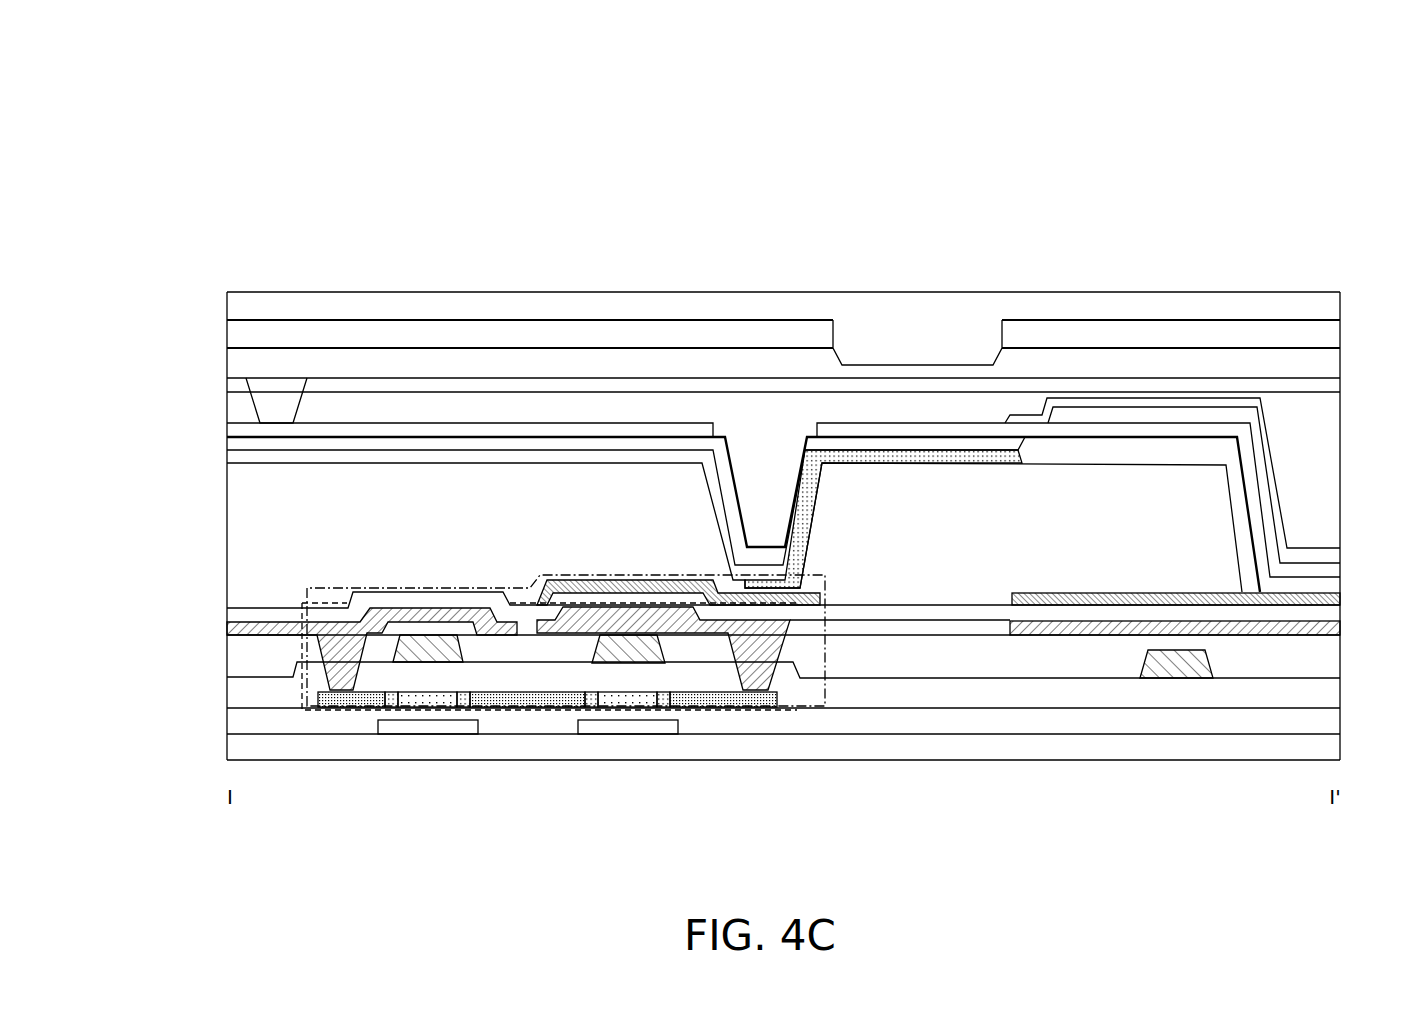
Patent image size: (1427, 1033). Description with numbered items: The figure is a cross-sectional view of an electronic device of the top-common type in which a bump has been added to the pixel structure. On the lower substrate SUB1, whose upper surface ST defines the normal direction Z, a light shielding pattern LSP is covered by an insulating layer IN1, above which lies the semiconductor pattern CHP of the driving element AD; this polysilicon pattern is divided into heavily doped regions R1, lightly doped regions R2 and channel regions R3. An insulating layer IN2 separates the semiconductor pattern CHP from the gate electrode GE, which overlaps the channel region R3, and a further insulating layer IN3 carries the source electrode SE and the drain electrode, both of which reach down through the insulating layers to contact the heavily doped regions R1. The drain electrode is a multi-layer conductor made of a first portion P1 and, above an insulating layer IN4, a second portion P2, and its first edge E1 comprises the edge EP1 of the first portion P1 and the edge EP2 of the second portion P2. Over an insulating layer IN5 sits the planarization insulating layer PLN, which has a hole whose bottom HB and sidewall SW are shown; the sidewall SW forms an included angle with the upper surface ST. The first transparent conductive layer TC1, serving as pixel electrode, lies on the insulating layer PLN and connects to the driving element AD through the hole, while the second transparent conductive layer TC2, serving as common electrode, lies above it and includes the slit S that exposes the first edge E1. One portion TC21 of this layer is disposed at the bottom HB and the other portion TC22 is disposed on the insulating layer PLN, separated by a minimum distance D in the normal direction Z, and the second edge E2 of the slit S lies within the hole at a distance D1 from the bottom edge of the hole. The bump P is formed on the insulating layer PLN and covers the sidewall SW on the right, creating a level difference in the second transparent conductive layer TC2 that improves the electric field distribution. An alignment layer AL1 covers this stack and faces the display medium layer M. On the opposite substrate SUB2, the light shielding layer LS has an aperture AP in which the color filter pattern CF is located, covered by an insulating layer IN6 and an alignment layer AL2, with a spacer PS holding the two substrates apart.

The driving element AD is at (732, 777).
The substrate SUB2 is at (1325, 302).
The light shielding layer LS is at (242, 333).
The insulating layer IN6 is at (1325, 367).
The alignment layer AL2 is at (1325, 383).
The color filter pattern CF is at (920, 348).
The aperture AP is at (842, 340).
The slit S is at (1047, 560).
The distance D1 is at (807, 615).
The normal direction Z is at (1405, 265).
The spacer PS is at (265, 404).
The alignment layer AL1 is at (242, 430).
The second transparent conductive layer TC2 is at (242, 446).
The other portion of second transparent conductive layer TC22 is at (650, 436).
The portion of second transparent conductive layer TC21 is at (752, 546).
The display medium layer M is at (1325, 405).
The bump P is at (1233, 468).
The insulating layer PLN is at (1210, 513).
The first transparent conductive layer TC1 is at (919, 458).
The sidewall SW is at (824, 525).
The bottom of hole HB is at (732, 586).
The second edge E2 is at (769, 558).
The minimum distance D is at (745, 548).
The insulating layer IN5 is at (1325, 582).
The insulating layer IN4 is at (1325, 613).
The insulating layer IN3 is at (1325, 655).
The insulating layer IN2 is at (1325, 690).
The insulating layer IN1 is at (1325, 717).
The substrate SUB1 is at (1325, 745).
The upper surface ST is at (240, 731).
The source electrode SE is at (412, 612).
The first portion P1 is at (1020, 628).
The second portion P2 is at (1110, 597).
The edge of second portion EP2 is at (826, 600).
The edge of first portion EP1 is at (796, 628).
The first edge E1 is at (946, 555).
The gate electrode GE is at (599, 654).
The semiconductor pattern CHP is at (327, 812).
The heavily doped region R1 is at (362, 700).
The lightly doped region R2 is at (393, 700).
The channel region R3 is at (433, 700).
The light shielding pattern LSP is at (455, 727).